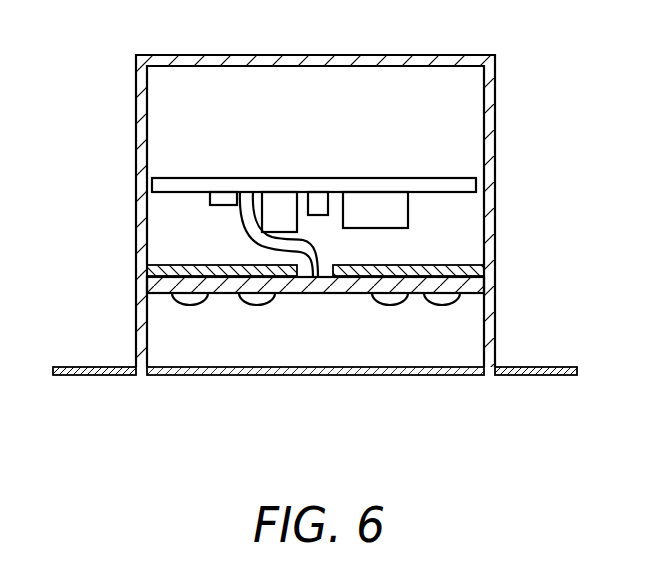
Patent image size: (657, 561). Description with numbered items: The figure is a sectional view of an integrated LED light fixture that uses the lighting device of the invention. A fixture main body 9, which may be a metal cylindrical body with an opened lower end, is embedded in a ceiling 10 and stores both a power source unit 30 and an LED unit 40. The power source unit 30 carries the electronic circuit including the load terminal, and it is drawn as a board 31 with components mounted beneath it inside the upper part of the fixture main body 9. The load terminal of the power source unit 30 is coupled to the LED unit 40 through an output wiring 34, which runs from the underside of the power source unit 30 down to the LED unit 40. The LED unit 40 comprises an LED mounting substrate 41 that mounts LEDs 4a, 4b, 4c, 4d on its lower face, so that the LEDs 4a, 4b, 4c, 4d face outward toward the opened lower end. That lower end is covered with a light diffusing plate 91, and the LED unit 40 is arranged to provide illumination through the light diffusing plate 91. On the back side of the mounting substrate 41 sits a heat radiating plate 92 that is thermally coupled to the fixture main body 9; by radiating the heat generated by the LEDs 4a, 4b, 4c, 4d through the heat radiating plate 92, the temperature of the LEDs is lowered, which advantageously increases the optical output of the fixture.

The fixture main body 9 is at (140, 83).
The ceiling 10 is at (543, 375).
The power source unit 30 is at (333, 179).
The circuit board 31 is at (469, 184).
The output wiring 34 is at (242, 232).
The LED unit 40 is at (311, 322).
The LED mounting substrate 41 is at (480, 285).
The LED 4a is at (190, 305).
The LED 4b is at (227, 428).
The LED 4c is at (390, 305).
The LED 4d is at (415, 427).
The light diffusing plate 91 is at (317, 375).
The heat radiating plate 92 is at (165, 272).